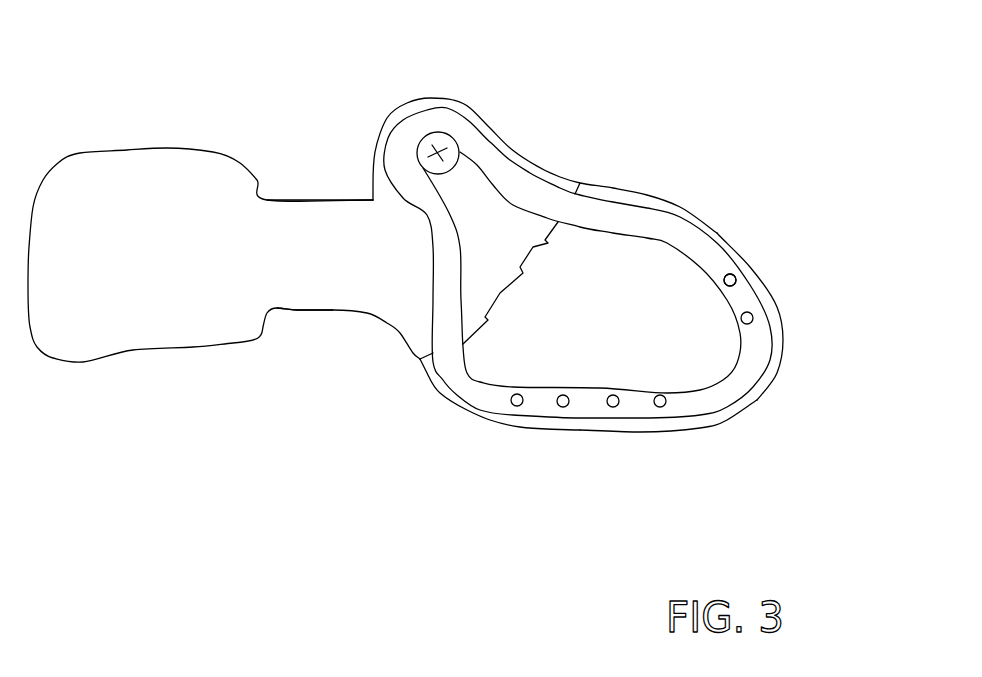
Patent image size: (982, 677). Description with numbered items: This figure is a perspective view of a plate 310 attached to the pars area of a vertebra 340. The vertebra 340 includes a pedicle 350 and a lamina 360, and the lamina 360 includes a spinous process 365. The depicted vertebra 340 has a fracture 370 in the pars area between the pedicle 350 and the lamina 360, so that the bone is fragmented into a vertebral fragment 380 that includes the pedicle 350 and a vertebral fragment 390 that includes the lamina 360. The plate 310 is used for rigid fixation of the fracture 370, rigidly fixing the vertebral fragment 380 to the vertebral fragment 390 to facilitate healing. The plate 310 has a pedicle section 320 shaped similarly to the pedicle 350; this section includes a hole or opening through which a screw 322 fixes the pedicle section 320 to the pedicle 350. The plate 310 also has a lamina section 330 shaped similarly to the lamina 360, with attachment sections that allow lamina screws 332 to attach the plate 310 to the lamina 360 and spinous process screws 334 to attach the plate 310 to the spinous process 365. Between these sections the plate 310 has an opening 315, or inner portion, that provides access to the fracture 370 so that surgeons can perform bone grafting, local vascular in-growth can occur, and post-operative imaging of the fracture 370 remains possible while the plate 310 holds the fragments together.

The plate 310 is at (595, 213).
The opening 315 is at (672, 268).
The pedicle section 320 is at (452, 97).
The screw 322 is at (417, 147).
The lamina section 330 is at (724, 261).
The lamina screws 332 is at (657, 410).
The spinous process screws 334 is at (737, 277).
The vertebra 340 is at (128, 150).
The pedicle 350 is at (315, 222).
The lamina 360 is at (750, 410).
The spinous process 365 is at (784, 350).
The fracture 370 is at (515, 285).
The vertebral fragment 380 is at (328, 315).
The vertebral fragment 390 is at (488, 424).